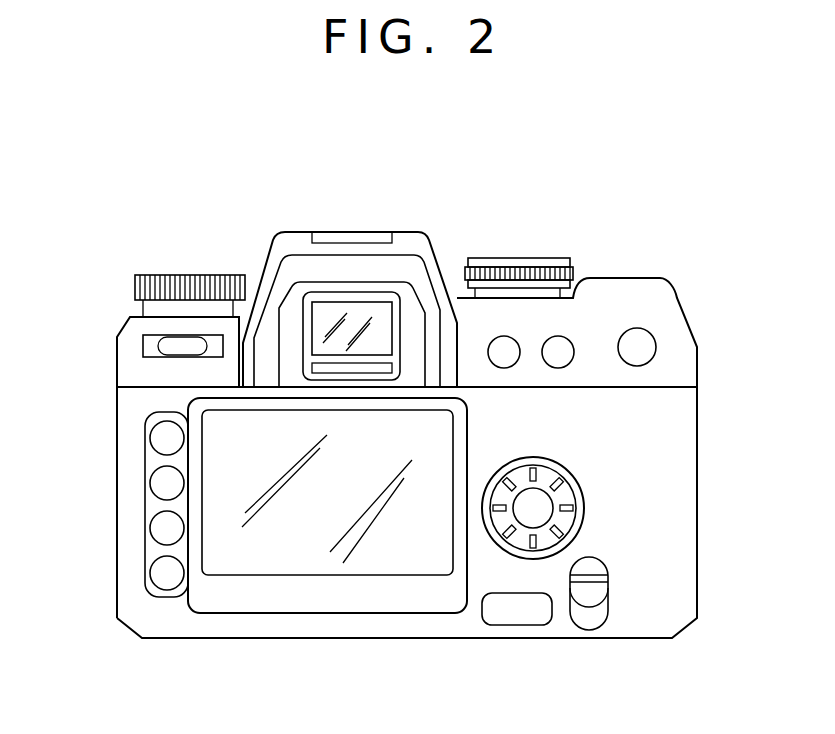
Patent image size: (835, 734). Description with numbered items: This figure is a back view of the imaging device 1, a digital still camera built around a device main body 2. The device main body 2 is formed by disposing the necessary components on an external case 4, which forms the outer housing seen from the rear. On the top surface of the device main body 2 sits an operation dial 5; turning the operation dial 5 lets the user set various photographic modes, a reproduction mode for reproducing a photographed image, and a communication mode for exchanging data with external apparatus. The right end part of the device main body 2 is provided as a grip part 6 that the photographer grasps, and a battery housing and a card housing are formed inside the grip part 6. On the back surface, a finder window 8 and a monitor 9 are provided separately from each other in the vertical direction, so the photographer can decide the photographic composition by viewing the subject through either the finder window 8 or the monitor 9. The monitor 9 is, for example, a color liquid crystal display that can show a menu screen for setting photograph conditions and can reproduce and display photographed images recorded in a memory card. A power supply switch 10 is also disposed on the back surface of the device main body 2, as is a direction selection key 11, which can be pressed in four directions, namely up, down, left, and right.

The imaging device 1 is at (684, 217).
The device main body 2 is at (682, 487).
The external case 4 is at (685, 532).
The operation dial 5 is at (547, 268).
The grip part 6 is at (685, 582).
The finder window 8 is at (362, 306).
The monitor 9 is at (295, 560).
The power supply switch 10 is at (177, 340).
The direction selection key 11 is at (568, 492).